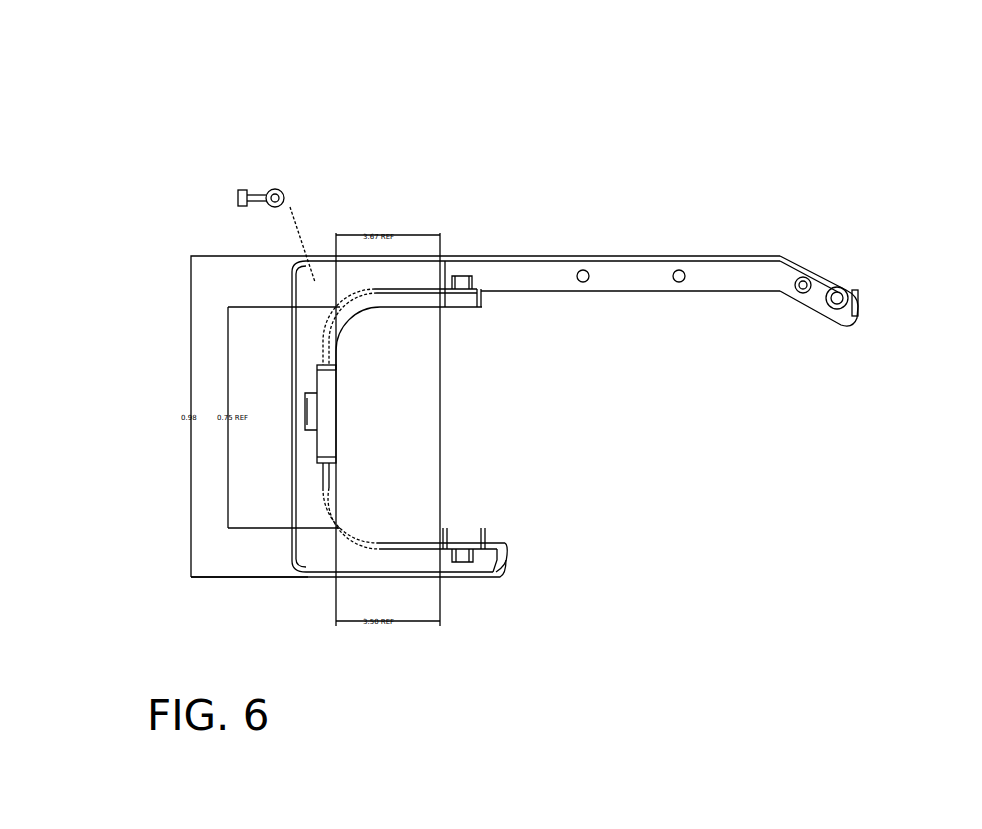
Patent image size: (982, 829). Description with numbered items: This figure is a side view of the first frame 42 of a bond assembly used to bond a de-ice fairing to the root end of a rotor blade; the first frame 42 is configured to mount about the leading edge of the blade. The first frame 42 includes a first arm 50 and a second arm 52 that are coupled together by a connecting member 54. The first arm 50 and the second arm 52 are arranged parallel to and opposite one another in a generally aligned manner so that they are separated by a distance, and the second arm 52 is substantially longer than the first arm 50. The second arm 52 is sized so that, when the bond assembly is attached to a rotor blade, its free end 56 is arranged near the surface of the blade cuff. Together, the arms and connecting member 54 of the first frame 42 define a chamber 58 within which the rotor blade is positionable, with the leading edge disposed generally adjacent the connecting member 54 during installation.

The first frame 42 is at (221, 149).
The first arm 50 is at (395, 562).
The second arm 52 is at (554, 268).
The connecting member 54 is at (307, 365).
The free end 56 is at (863, 310).
The chamber 58 is at (402, 422).